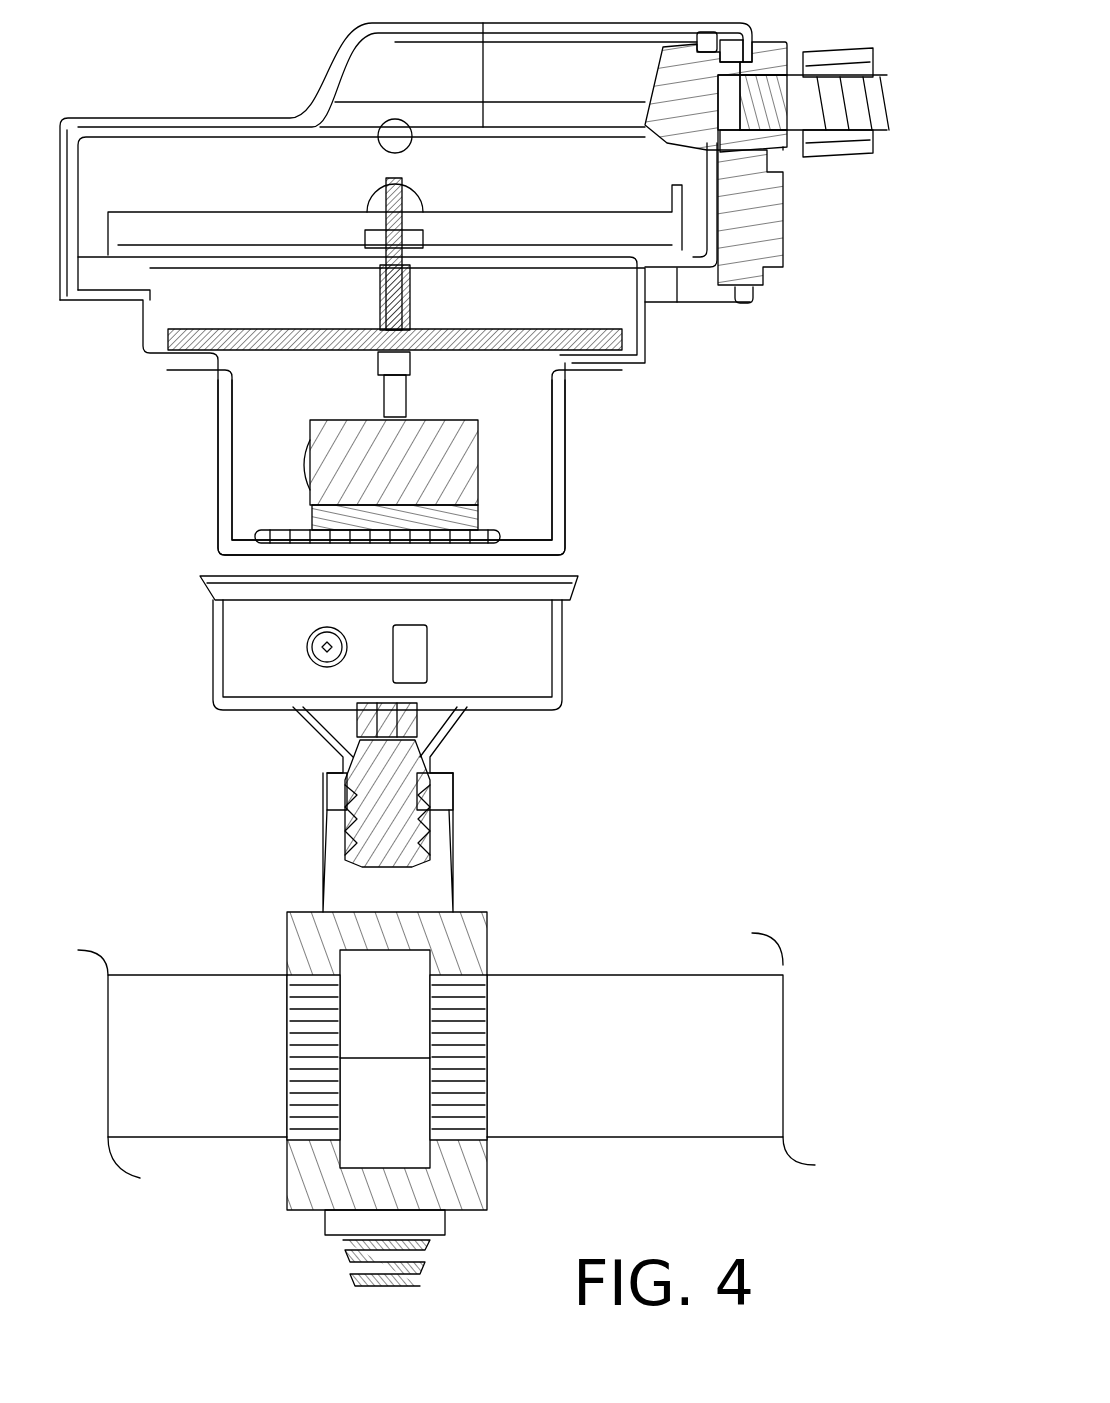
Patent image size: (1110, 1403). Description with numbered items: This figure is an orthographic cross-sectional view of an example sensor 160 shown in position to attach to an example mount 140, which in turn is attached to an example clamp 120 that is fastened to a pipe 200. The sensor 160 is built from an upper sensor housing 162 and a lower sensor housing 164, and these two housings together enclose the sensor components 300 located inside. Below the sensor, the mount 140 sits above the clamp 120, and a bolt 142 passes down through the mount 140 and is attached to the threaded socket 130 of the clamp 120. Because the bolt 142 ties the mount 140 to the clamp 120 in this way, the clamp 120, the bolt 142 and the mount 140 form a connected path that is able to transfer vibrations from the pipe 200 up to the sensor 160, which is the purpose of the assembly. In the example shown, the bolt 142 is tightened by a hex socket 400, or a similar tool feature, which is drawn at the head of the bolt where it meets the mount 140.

The clamp 120 is at (556, 957).
The threaded socket 130 is at (322, 823).
The mount 140 is at (343, 744).
The bolt 142 is at (347, 838).
The sensor 160 is at (474, 289).
The upper sensor housing 162 is at (230, 115).
The lower sensor housing 164 is at (222, 432).
The pipe 200 is at (180, 975).
The sensor components 300 is at (497, 393).
The hex socket 400 is at (418, 717).